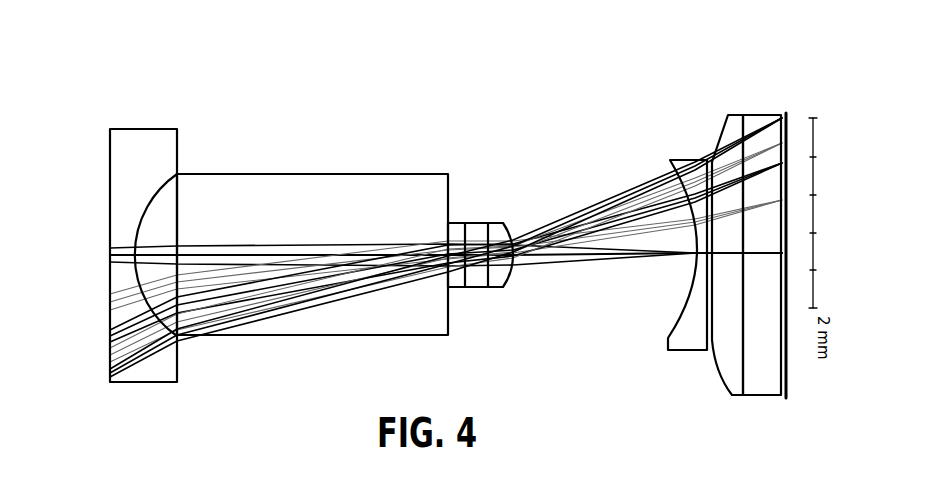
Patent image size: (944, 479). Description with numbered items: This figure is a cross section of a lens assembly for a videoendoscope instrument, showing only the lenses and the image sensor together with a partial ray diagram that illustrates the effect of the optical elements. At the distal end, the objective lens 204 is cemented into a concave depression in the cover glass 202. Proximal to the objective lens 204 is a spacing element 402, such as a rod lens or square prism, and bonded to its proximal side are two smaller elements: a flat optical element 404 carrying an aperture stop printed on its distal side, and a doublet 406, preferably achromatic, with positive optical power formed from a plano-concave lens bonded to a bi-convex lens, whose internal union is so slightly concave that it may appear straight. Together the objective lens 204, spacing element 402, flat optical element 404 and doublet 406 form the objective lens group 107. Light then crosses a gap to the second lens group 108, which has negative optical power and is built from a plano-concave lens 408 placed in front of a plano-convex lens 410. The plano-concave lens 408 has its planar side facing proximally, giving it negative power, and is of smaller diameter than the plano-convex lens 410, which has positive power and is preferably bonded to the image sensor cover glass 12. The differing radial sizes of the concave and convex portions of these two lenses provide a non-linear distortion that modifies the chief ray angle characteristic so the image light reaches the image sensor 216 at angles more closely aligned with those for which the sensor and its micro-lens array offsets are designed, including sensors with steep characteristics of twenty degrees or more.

The objective lens group 107 is at (513, 98).
The second lens group 108 is at (742, 98).
The image sensor cover glass 12 is at (755, 115).
The image sensor 216 is at (787, 113).
The cover glass 202 is at (104, 382).
The objective lens 204 is at (142, 450).
The spacing element 402 is at (285, 174).
The flat optical element 404 is at (455, 223).
The doublet 406 is at (503, 223).
The plano-concave lens 408 is at (668, 160).
The plano-convex lens 410 is at (728, 118).